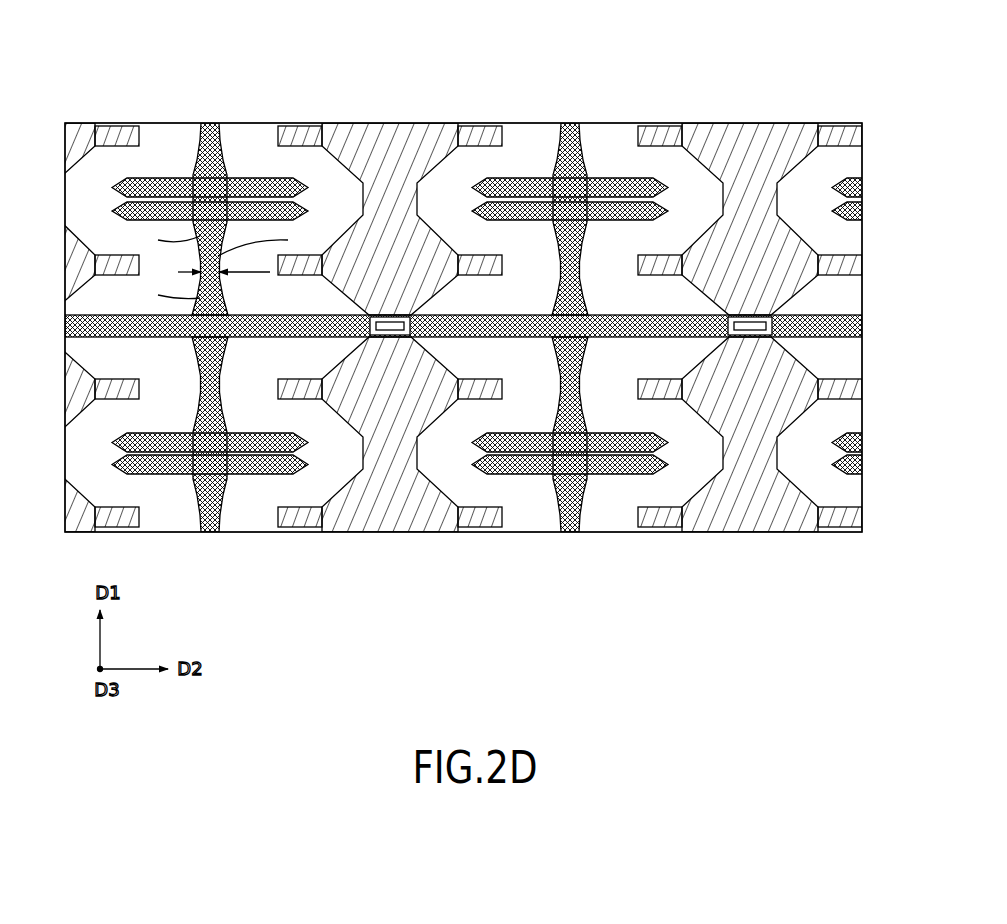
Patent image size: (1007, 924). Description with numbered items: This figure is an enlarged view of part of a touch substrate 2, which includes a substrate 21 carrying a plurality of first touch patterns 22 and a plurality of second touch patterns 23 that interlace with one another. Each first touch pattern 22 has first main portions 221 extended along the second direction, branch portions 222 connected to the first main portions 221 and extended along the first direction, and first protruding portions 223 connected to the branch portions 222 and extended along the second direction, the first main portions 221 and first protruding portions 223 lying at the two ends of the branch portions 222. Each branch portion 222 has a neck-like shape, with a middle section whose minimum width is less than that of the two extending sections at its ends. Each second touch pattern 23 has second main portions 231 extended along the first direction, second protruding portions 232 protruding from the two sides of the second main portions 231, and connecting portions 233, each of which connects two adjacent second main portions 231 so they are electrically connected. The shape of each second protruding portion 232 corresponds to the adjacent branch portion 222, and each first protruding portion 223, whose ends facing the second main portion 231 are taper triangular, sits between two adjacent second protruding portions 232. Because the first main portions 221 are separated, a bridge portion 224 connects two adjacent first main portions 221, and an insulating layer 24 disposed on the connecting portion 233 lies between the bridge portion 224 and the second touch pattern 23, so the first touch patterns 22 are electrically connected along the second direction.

The touch substrate 2 is at (228, 52).
The substrate 21 is at (614, 140).
The first touch pattern 22 is at (536, 297).
The first main portion 221 is at (278, 320).
The branch portion 222 is at (583, 290).
The first protruding portion 223 is at (670, 208).
The bridge portion 224 is at (727, 318).
The second touch pattern 23 is at (431, 297).
The second main portion 231 is at (427, 250).
The second protruding portion 232 is at (477, 133).
The connecting portion 233 is at (773, 327).
The insulating layer 24 is at (730, 338).